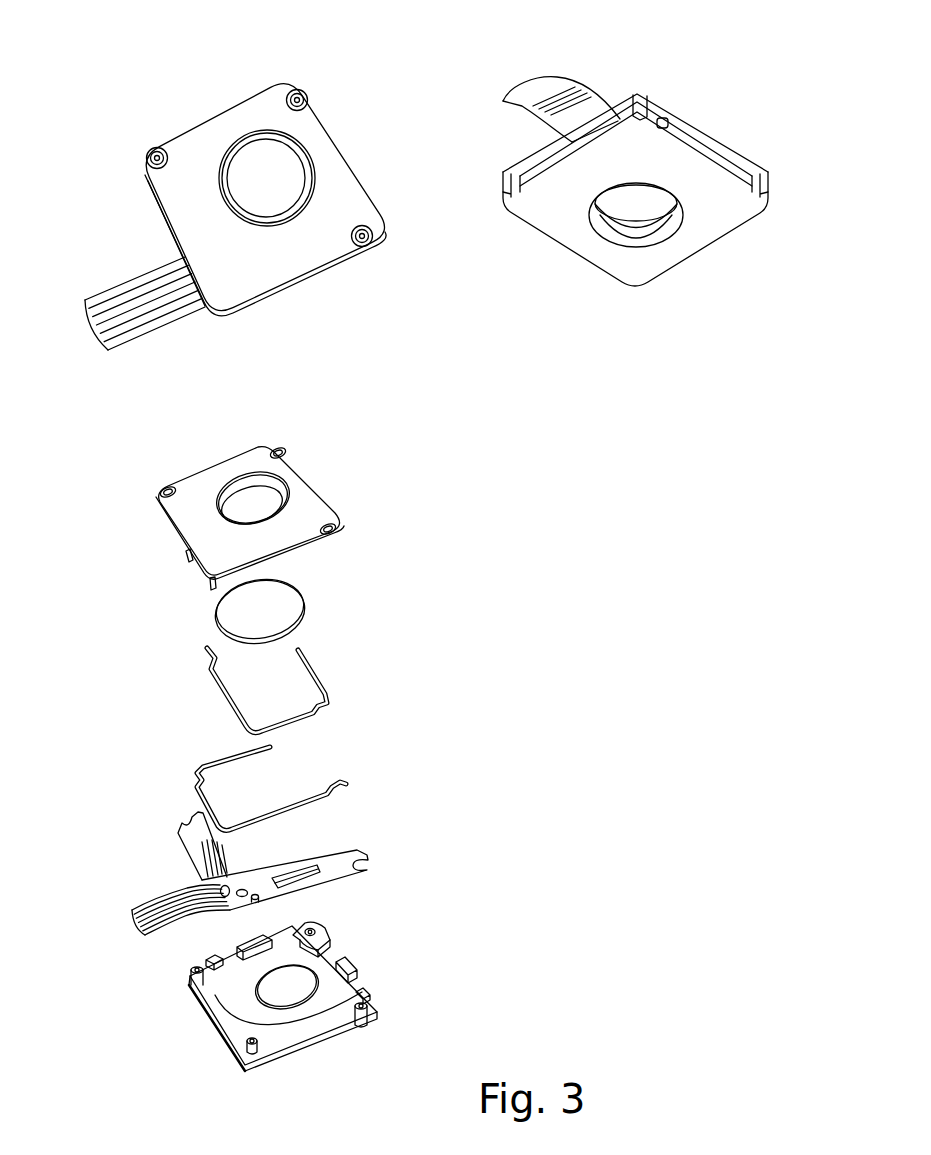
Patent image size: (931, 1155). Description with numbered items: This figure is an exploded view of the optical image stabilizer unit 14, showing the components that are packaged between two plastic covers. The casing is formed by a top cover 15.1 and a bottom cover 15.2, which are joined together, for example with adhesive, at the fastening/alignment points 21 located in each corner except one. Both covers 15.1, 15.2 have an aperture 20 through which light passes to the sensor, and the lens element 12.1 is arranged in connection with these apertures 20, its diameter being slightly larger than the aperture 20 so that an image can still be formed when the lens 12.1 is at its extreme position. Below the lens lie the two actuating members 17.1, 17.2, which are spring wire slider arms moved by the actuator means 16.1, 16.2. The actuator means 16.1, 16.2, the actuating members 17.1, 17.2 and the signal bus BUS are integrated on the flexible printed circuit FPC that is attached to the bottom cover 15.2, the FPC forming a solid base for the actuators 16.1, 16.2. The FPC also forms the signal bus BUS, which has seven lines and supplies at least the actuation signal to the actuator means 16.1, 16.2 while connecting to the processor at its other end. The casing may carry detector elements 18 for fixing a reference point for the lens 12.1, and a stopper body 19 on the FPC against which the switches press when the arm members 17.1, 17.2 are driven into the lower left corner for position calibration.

The optical image stabilizer unit 14 is at (695, 113).
The top cover 15.1 is at (327, 147).
The bottom cover 15.2 is at (353, 1033).
The lens element 12.1 is at (285, 190).
The actuating member 17.1 is at (323, 681).
The actuating member 17.2 is at (327, 798).
The actuator means 16.1 is at (310, 879).
The actuator means 16.2 is at (203, 860).
The detector elements 18 is at (238, 902).
The stopper body 19 is at (245, 1045).
The aperture 20 is at (224, 487).
The fastening/alignment points 21 is at (149, 147).
The signal bus BUS is at (150, 327).
The flexible printed circuit FPC is at (357, 849).